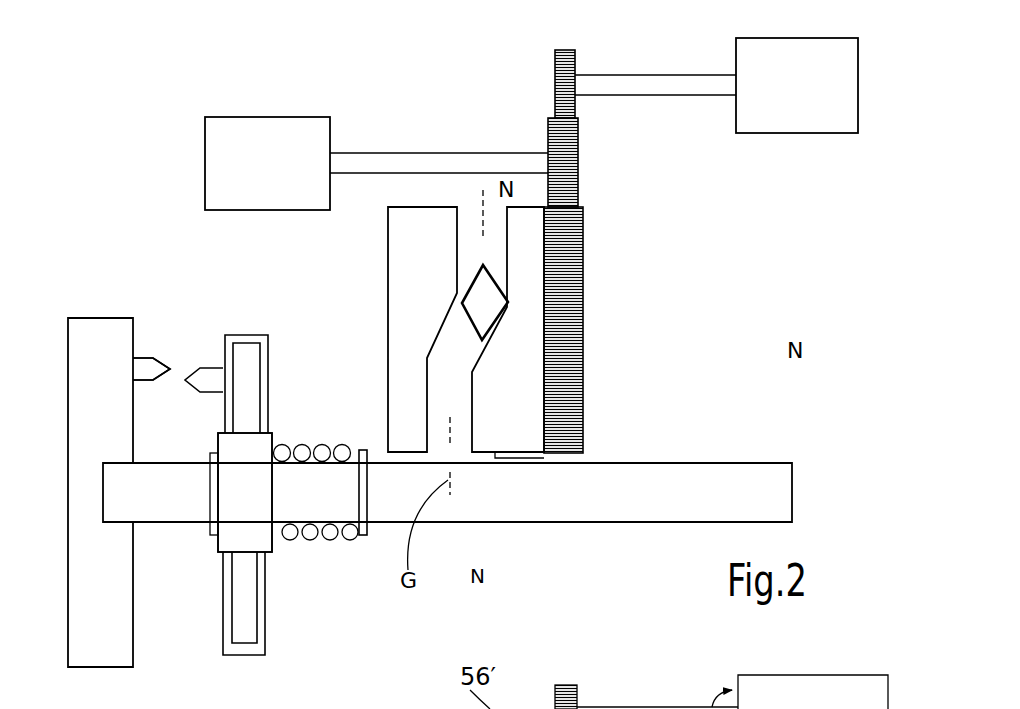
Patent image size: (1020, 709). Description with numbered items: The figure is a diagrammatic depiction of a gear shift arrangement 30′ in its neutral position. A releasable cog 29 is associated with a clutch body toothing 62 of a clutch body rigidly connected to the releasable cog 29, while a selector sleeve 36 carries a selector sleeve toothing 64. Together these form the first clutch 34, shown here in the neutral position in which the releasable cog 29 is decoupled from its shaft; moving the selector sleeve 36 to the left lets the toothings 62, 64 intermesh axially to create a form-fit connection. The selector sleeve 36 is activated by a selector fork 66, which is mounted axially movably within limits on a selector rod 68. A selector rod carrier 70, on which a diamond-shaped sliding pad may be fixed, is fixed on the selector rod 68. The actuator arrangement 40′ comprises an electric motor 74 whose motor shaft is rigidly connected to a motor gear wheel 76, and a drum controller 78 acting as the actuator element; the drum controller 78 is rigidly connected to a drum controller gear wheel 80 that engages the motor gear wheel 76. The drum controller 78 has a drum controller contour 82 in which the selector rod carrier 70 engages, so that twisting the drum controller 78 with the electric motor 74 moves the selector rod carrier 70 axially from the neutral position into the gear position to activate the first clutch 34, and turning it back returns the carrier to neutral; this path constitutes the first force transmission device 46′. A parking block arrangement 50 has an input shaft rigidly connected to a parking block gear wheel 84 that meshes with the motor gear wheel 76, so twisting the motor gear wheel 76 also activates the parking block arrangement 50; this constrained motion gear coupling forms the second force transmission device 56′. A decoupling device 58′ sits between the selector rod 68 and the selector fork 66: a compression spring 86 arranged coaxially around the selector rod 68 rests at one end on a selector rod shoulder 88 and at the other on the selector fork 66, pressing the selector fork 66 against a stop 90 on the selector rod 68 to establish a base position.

The releasable cog 29 is at (100, 343).
The gear shift arrangement 30′ is at (165, 123).
The first clutch 34 is at (170, 302).
The selector sleeve 36 is at (223, 603).
The actuator arrangement 40′ is at (248, 100).
The first force transmission device 46′ is at (655, 335).
The parking block arrangement 50 is at (797, 133).
The second force transmission device 56′ is at (527, 105).
The decoupling device 58′ is at (342, 559).
The clutch body toothing 62 is at (150, 372).
The selector sleeve toothing 64 is at (207, 378).
The selector fork 66 is at (255, 537).
The selector rod 68 is at (472, 497).
The selector rod carrier 70 is at (473, 350).
The electric motor 74 is at (292, 135).
The motor gear wheel 76 is at (572, 193).
The drum controller 78 is at (388, 280).
The drum controller gear wheel 80 is at (573, 412).
The drum controller contour 82 is at (482, 241).
The parking block gear wheel 84 is at (555, 70).
The spring 86 is at (322, 450).
The selector rod shoulder 88 is at (362, 452).
The stop 90 is at (215, 455).